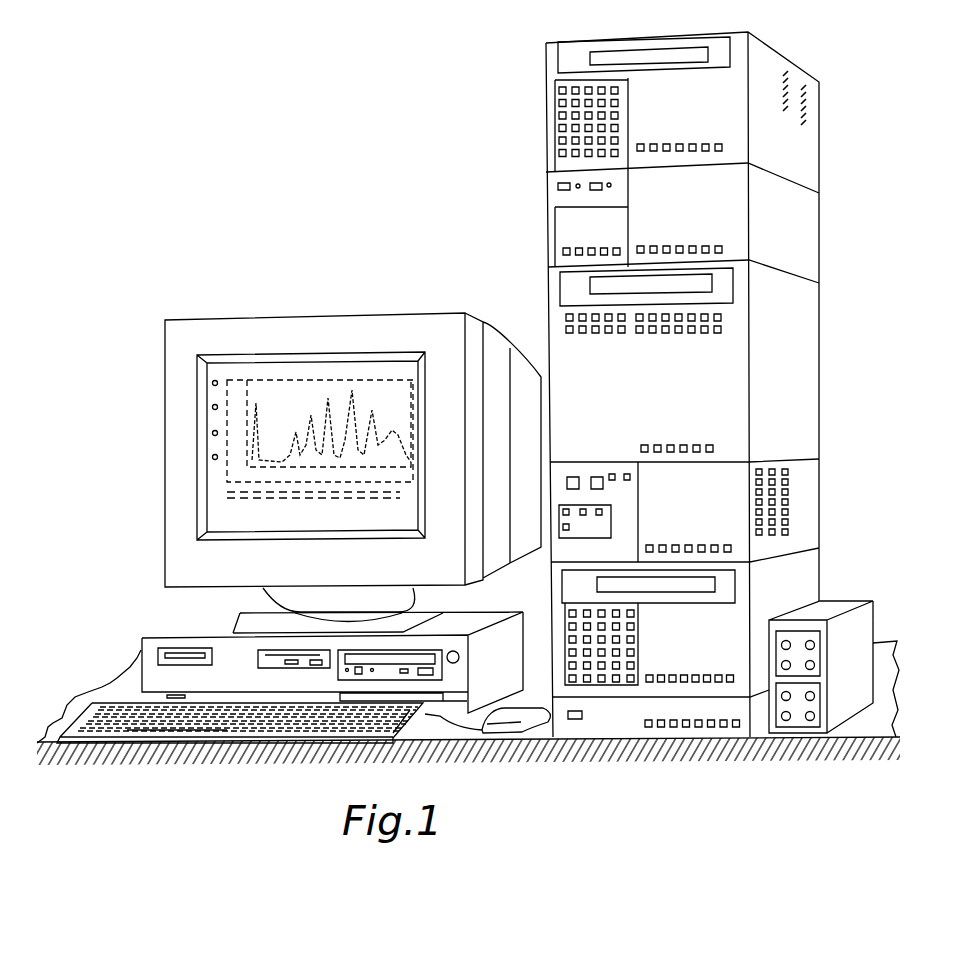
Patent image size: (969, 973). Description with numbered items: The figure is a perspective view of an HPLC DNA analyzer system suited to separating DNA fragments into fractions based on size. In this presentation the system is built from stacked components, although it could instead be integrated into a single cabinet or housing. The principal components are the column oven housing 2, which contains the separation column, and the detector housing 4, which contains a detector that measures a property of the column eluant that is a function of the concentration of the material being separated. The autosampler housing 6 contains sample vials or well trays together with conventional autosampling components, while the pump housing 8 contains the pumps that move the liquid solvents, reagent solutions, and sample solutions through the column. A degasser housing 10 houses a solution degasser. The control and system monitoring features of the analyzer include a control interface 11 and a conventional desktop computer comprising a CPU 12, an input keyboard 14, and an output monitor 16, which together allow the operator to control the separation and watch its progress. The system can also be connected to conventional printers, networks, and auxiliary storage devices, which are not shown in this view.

The column oven housing 2 is at (683, 218).
The detector housing 4 is at (681, 121).
The autosampler housing 6 is at (662, 401).
The pump housing 8 is at (702, 644).
The degasser housing 10 is at (838, 612).
The control interface 11 is at (618, 723).
The CPU 12 is at (197, 642).
The input keyboard 14 is at (237, 720).
The output monitor 16 is at (175, 428).